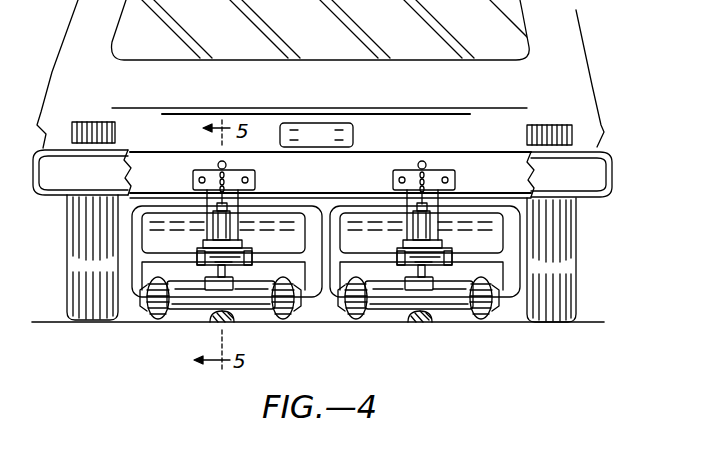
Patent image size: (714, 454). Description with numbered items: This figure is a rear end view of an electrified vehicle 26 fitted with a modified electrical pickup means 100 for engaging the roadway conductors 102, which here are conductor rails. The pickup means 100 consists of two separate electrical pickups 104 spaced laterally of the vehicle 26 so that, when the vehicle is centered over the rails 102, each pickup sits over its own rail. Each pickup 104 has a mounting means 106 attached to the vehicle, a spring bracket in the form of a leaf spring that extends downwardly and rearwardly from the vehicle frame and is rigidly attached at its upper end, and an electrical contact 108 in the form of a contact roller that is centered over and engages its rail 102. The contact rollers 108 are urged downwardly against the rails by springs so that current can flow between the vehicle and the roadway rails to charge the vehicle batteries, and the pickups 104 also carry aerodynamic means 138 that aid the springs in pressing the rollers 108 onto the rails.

The electrified vehicle 26 is at (603, 108).
The modified electrical pickup means 100 is at (384, 197).
The roadway conductors 102 is at (228, 324).
The electrical pickups 104 is at (159, 319).
The mounting means 106 is at (212, 166).
The electrical contact 108 is at (198, 323).
The aerodynamic means 138 is at (184, 221).